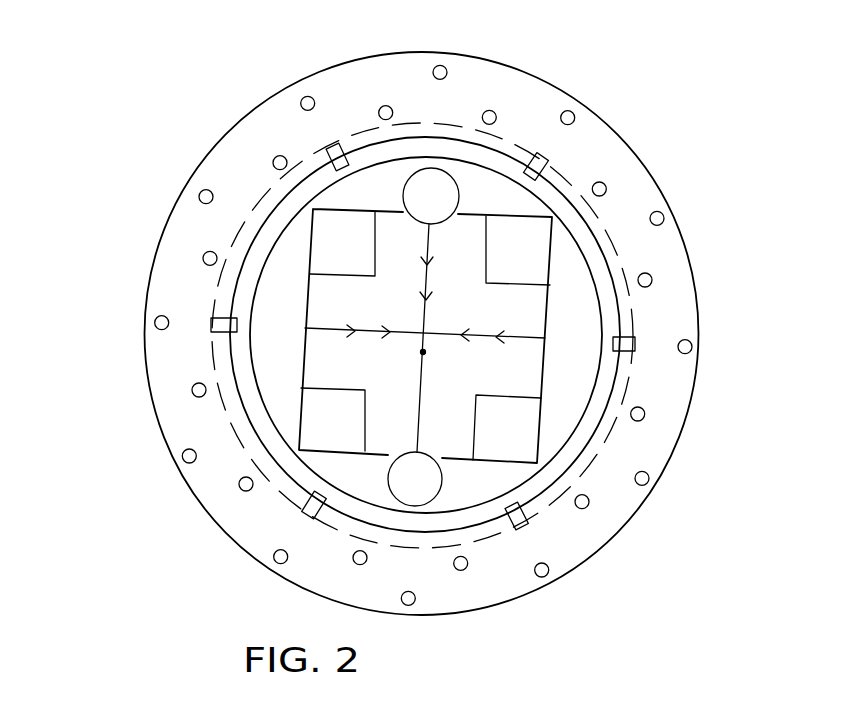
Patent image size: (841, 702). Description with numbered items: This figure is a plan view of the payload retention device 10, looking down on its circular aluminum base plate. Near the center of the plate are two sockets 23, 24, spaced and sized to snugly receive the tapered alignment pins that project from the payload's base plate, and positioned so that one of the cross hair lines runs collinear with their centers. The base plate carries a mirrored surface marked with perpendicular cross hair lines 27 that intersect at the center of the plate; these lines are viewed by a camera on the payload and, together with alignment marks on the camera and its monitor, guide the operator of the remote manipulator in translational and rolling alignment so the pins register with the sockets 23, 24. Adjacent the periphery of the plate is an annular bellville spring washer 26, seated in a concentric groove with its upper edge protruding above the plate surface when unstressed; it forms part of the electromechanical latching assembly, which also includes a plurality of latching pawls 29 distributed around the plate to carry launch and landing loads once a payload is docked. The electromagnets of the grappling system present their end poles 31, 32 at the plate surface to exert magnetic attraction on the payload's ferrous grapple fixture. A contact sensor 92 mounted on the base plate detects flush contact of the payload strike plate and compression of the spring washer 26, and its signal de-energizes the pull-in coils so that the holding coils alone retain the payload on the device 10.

The payload retention device 10 is at (260, 97).
The socket 23 is at (438, 492).
The socket 24 is at (404, 194).
The bellville spring washer 26 is at (597, 261).
The cross hair lines 27 is at (428, 333).
The latching pawls 29 is at (325, 151).
The end pole 31 is at (326, 238).
The end pole 32 is at (529, 238).
The contact sensor 92 is at (423, 352).